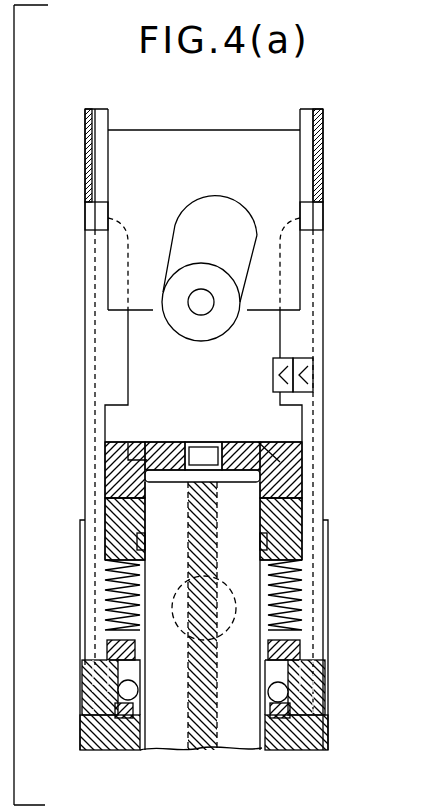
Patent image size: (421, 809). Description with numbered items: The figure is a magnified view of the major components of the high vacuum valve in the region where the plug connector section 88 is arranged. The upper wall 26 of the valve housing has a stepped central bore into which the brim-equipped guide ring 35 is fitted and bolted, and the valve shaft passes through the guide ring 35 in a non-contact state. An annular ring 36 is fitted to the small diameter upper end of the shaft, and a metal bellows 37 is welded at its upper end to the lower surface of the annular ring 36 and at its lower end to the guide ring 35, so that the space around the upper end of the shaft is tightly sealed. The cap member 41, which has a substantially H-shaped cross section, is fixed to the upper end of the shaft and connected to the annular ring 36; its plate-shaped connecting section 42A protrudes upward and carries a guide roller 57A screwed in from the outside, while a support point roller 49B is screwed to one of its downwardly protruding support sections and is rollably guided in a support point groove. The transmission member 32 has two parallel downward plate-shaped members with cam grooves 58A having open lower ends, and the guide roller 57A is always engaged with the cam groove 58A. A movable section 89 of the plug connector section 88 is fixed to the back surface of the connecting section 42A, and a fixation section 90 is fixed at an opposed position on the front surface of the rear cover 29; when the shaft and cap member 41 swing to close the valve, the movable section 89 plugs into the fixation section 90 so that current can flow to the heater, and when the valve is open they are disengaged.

The upper wall 26 is at (313, 690).
The rear cover 29 is at (318, 262).
The transmission member 32 is at (272, 182).
The brim-equipped guide ring 35 is at (302, 655).
The annular ring 36 is at (113, 510).
The bellows 37 is at (250, 600).
The cap member 41 is at (136, 426).
The connecting section 42A is at (262, 397).
The support point roller 49B is at (307, 572).
The guide roller 57A is at (181, 318).
The cam groove 58A is at (175, 243).
The plug connector section 88 is at (318, 392).
The movable section 89 is at (283, 357).
The fixation section 90 is at (309, 374).